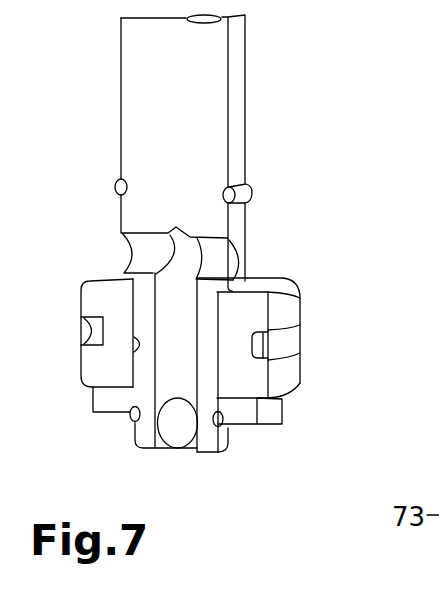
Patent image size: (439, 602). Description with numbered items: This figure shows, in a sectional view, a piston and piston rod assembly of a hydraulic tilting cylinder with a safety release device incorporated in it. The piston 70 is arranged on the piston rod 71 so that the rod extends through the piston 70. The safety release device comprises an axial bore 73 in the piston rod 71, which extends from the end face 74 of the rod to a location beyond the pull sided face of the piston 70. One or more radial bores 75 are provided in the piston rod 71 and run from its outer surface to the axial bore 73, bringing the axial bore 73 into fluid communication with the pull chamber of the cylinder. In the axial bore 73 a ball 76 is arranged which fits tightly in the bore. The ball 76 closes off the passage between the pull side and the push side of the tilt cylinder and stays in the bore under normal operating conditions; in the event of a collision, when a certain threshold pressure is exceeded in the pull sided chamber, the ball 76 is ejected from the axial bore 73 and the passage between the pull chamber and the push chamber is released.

The piston 70 is at (253, 317).
The piston rod 71 is at (208, 120).
The axial bore 73 is at (175, 378).
The end face 74 is at (207, 452).
The radial bores 75 is at (226, 262).
The ball 76 is at (170, 426).